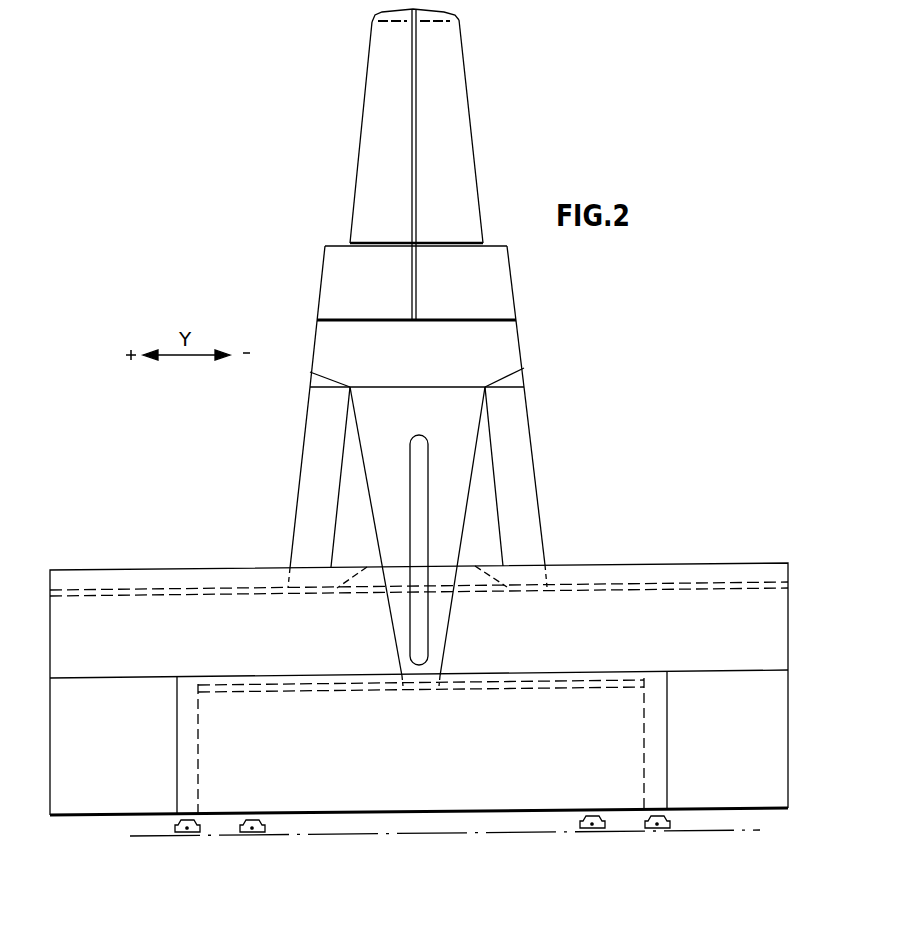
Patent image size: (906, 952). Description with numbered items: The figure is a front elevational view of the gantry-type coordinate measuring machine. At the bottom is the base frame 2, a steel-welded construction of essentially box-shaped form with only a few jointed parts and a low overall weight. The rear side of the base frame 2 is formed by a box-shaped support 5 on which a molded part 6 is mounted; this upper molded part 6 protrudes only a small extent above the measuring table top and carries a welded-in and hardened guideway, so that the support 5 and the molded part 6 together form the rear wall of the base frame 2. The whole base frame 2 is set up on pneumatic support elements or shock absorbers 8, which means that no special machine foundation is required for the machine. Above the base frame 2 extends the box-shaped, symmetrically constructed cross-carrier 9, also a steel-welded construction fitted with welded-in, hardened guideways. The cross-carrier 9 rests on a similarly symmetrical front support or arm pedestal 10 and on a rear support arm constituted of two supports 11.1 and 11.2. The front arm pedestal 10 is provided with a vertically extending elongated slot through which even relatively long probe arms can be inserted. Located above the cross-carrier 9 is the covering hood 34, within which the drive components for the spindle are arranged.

The covering hood 34 is at (462, 138).
The cross-carrier 9 is at (495, 348).
The support 11.1 is at (523, 433).
The support 11.2 is at (313, 428).
The front support arm pedestal 10 is at (453, 515).
The molded part 6 is at (770, 641).
The box-shaped support 5 is at (772, 716).
The base frame 2 is at (480, 790).
The pneumatic support elements 8 is at (252, 836).